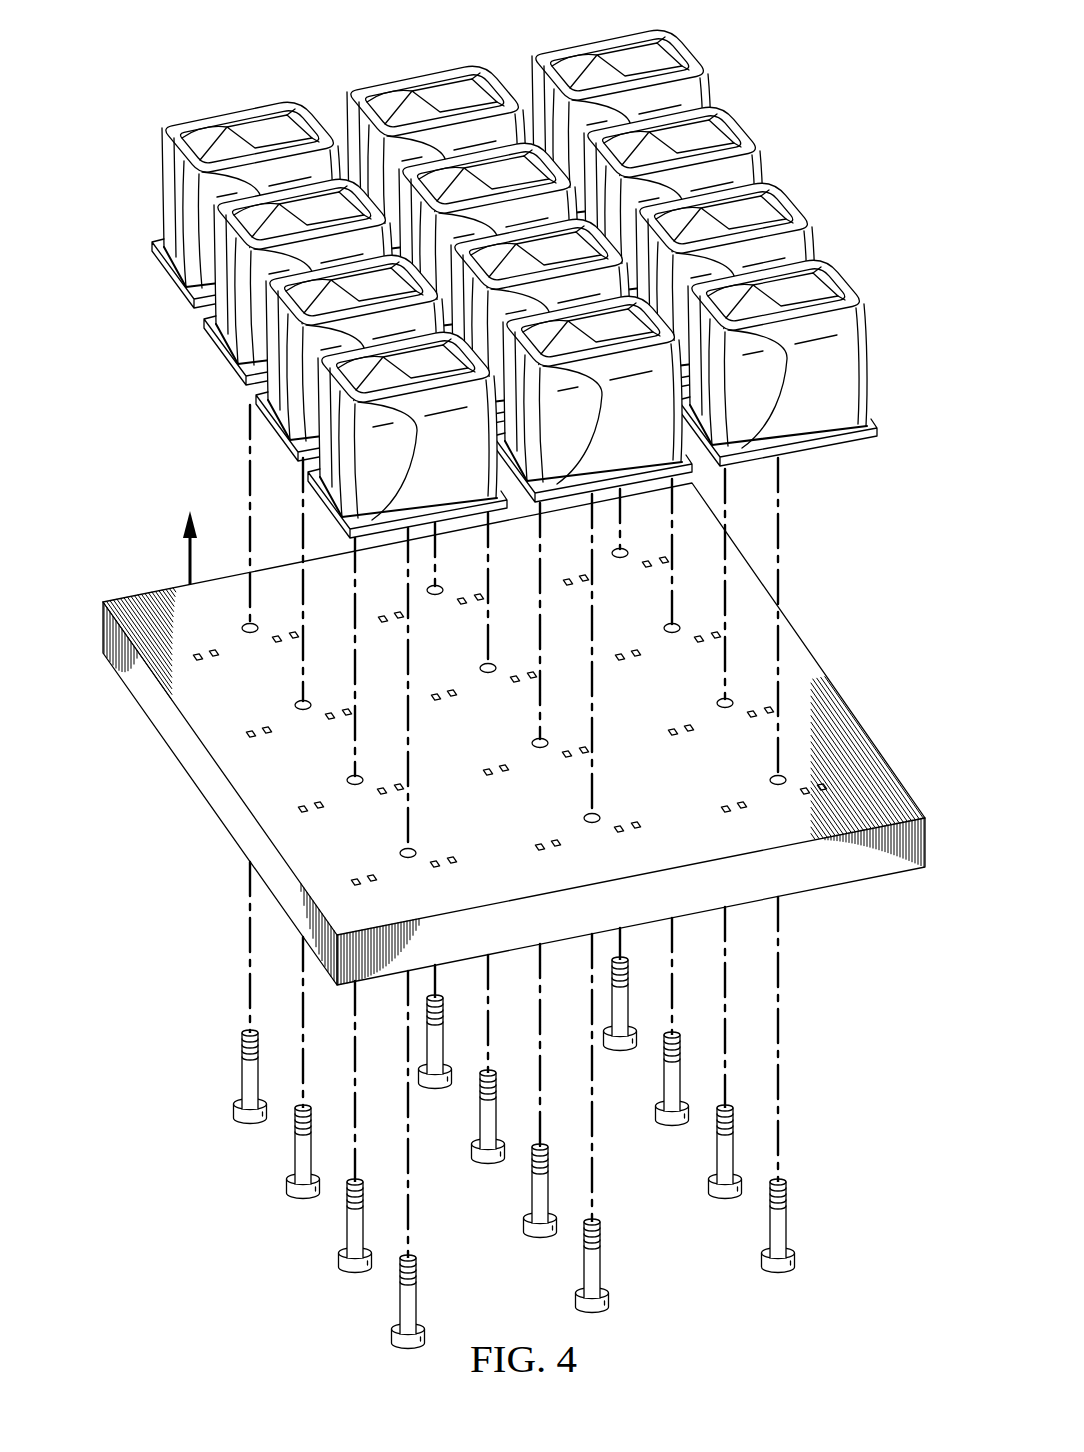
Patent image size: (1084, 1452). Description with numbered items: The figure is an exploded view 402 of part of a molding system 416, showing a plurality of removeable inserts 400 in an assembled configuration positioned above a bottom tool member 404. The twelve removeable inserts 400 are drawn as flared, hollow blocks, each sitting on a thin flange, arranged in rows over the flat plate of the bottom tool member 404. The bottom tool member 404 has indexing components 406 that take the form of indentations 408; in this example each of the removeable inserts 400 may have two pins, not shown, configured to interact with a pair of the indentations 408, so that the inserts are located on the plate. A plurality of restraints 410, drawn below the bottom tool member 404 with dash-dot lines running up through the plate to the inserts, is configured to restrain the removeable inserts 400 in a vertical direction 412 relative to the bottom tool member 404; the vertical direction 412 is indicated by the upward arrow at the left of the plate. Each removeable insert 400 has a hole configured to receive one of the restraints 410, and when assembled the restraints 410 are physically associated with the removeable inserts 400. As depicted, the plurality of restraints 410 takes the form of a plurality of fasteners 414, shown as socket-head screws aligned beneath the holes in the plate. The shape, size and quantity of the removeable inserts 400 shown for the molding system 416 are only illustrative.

The plurality of removeable inserts 400 is at (812, 181).
The view 402 is at (119, 59).
The bottom tool member 404 is at (203, 775).
The indexing components 406 is at (263, 726).
The indentations 408 is at (500, 786).
The plurality of restraints 410 is at (266, 1199).
The vertical direction 412 is at (190, 562).
The plurality of fasteners 414 is at (234, 1117).
The molding system 416 is at (218, 79).